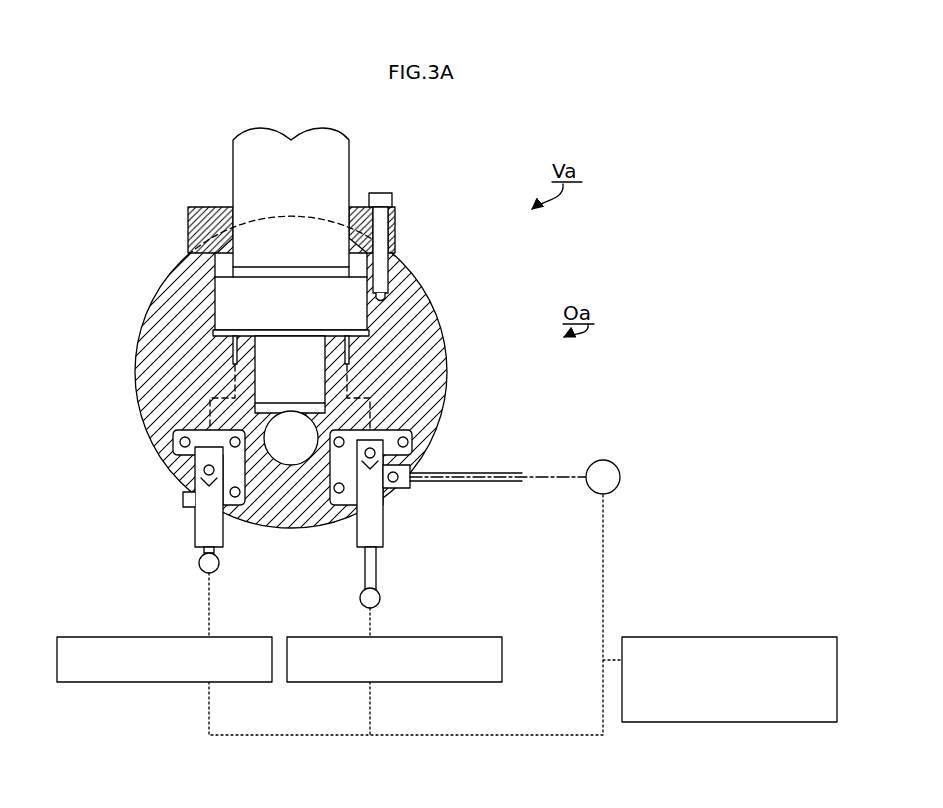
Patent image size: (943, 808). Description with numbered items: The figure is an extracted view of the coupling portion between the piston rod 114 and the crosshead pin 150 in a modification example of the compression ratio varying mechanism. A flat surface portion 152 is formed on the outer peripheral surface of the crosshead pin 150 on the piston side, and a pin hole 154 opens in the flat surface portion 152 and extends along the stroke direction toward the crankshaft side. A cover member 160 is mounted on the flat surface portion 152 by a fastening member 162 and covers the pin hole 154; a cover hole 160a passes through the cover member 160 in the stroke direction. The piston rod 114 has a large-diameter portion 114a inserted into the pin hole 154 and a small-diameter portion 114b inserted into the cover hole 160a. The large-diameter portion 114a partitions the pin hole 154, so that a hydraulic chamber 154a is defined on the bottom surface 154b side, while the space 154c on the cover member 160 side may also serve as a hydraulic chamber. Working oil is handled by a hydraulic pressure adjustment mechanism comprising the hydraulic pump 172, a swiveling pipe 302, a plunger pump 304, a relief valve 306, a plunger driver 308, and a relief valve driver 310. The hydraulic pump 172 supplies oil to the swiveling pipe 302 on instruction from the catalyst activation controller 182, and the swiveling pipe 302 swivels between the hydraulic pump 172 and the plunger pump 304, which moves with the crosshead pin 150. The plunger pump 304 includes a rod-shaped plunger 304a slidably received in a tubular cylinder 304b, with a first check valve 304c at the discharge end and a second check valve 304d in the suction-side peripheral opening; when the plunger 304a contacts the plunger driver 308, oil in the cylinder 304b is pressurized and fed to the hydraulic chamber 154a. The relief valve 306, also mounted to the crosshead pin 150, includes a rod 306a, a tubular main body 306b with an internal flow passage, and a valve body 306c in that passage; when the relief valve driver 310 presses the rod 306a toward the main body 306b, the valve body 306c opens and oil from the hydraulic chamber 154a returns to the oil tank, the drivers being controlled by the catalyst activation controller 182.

The piston rod 114 is at (233, 145).
The large-diameter portion 114a is at (228, 302).
The small-diameter portion 114b is at (272, 162).
The crosshead pin 150 is at (138, 408).
The flat surface portion 152 is at (191, 249).
The pin hole 154 is at (221, 322).
The hydraulic chamber 154a is at (337, 331).
The bottom surface 154b is at (353, 328).
The space 154c is at (218, 258).
The cover member 160 is at (188, 207).
The cover hole 160a is at (349, 243).
The fastening member 162 is at (392, 192).
The hydraulic pump 172 is at (607, 461).
The catalyst activation controller 182 is at (790, 637).
The swiveling pipe 302 is at (521, 471).
The plunger pump 304 is at (429, 483).
The plunger 304a is at (378, 562).
The cylinder 304b is at (380, 513).
The first check valve 304c is at (379, 443).
The second check valve 304d is at (398, 468).
The relief valve 306 is at (165, 498).
The rod 306a is at (204, 556).
The main body 306b is at (195, 526).
The valve body 306c is at (203, 472).
The plunger driver 308 is at (473, 637).
The relief valve driver 310 is at (245, 637).